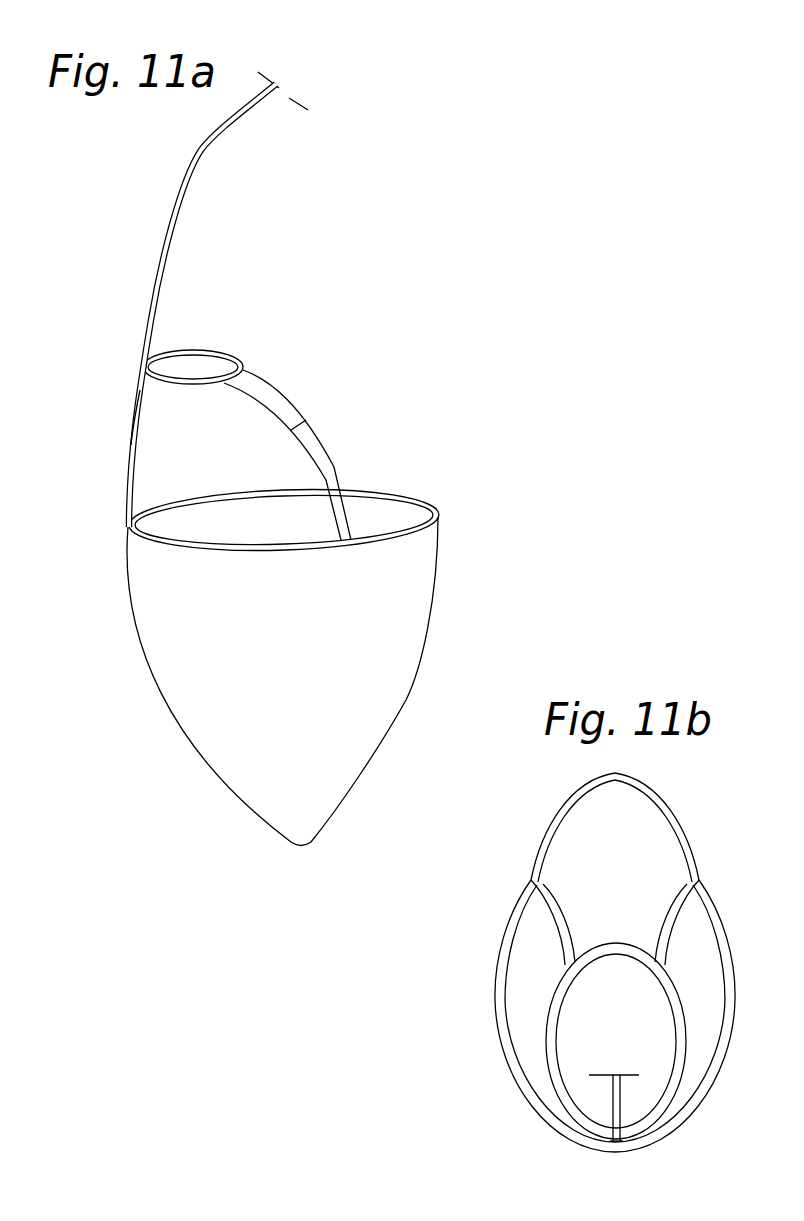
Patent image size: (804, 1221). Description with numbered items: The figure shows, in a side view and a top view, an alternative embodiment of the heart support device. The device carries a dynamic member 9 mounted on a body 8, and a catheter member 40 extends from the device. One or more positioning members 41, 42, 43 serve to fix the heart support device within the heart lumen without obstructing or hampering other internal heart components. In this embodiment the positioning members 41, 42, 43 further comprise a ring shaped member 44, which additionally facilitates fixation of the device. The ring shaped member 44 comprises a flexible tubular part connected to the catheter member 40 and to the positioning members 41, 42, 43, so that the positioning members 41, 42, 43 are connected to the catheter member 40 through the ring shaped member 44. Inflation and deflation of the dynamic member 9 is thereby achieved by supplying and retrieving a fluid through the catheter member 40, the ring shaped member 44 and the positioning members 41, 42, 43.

In FIG. 11A, the cup body 8 is at (400, 633).
In FIG. 11B, the cup body 8 is at (698, 1092).
In FIG. 11A, the dynamic member 9 is at (182, 528).
In FIG. 11B, the dynamic member 9 is at (535, 988).
In FIG. 11A, the catheter member 40 is at (185, 197).
In FIG. 11B, the catheter member 40 is at (614, 1095).
In FIG. 11A, the positioning member 41 is at (278, 388).
In FIG. 11B, the positioning member 41 is at (553, 912).
In FIG. 11A, the positioning member 42 is at (124, 430).
In FIG. 11B, the positioning member 42 is at (617, 1142).
In FIG. 11A, the positioning member 43 is at (300, 425).
In FIG. 11B, the positioning member 43 is at (672, 912).
In FIG. 11A, the ring shaped member 44 is at (182, 388).
In FIG. 11B, the ring shaped member 44 is at (678, 1037).